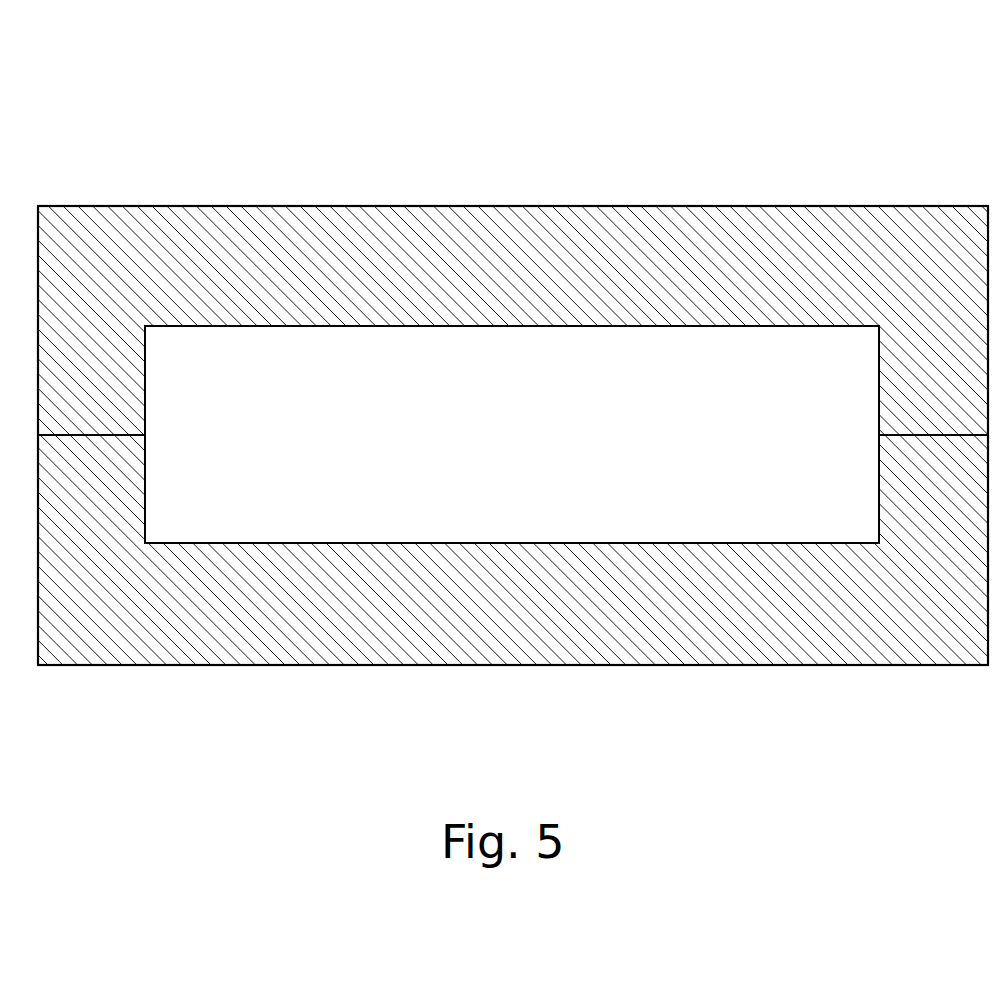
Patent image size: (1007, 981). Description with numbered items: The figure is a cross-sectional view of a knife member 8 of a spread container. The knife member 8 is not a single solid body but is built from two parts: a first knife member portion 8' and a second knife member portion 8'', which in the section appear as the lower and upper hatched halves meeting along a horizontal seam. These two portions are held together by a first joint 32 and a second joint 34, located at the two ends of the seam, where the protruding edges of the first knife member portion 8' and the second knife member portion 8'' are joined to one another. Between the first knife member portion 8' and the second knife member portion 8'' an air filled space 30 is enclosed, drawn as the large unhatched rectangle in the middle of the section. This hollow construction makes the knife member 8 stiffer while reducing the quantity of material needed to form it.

The knife member 8 is at (513, 351).
The first knife member portion 8' is at (513, 604).
The second knife member portion 8'' is at (513, 262).
The air filled space 30 is at (393, 427).
The first joint 32 is at (910, 433).
The second joint 34 is at (80, 433).